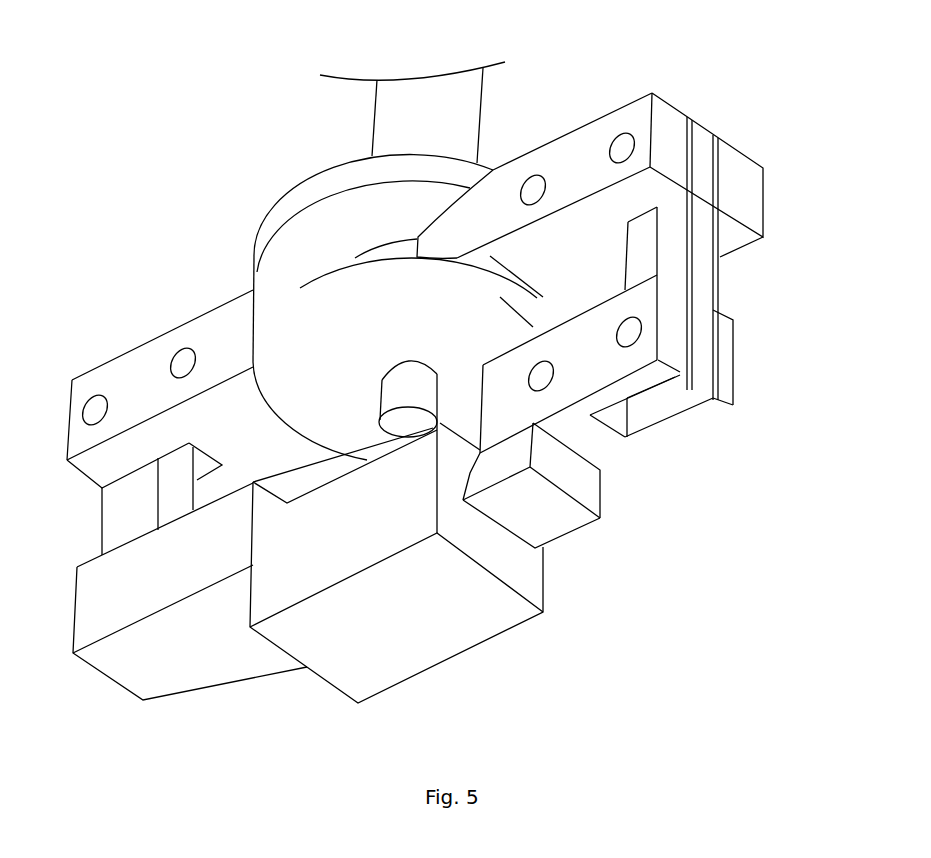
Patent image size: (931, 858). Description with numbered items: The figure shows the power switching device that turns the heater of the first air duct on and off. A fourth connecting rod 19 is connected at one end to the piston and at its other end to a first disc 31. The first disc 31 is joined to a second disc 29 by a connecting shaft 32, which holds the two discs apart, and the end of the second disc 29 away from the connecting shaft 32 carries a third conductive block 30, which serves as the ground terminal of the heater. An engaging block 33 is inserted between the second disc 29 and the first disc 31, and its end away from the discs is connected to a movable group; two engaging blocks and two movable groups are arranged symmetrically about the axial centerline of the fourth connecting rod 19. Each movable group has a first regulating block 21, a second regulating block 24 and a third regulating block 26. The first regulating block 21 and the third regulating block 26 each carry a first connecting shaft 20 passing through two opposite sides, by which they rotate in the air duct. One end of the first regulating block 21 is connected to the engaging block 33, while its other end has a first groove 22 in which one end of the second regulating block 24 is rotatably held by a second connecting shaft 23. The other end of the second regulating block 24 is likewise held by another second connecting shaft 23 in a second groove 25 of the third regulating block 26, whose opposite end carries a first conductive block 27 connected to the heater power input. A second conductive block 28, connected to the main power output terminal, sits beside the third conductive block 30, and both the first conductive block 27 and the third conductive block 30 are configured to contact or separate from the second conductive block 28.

The fourth connecting rod 19 is at (425, 115).
The first connecting shaft 20 is at (535, 188).
The first regulating block 21 is at (665, 153).
The first groove 22 is at (600, 237).
The second connecting shaft 23 is at (631, 332).
The second regulating block 24 is at (677, 390).
The second groove 25 is at (637, 432).
The third regulating block 26 is at (628, 445).
The first conductive block 27 is at (540, 515).
The second conductive block 28 is at (428, 633).
The second disc 29 is at (298, 392).
The third conductive block 30 is at (407, 392).
The first disc 31 is at (287, 260).
The connecting shaft 32 is at (383, 257).
The engaging block 33 is at (455, 238).